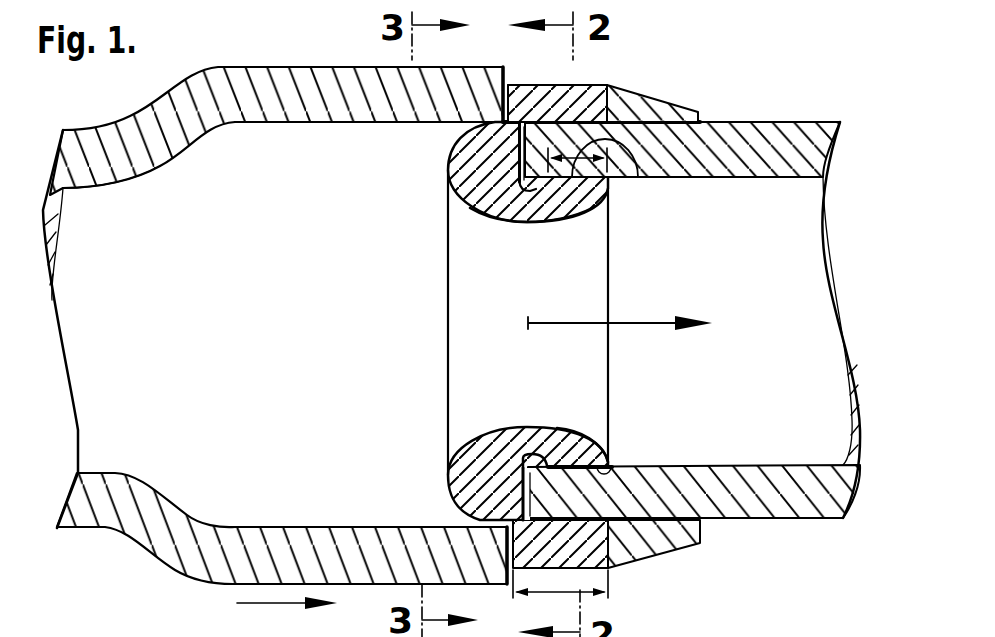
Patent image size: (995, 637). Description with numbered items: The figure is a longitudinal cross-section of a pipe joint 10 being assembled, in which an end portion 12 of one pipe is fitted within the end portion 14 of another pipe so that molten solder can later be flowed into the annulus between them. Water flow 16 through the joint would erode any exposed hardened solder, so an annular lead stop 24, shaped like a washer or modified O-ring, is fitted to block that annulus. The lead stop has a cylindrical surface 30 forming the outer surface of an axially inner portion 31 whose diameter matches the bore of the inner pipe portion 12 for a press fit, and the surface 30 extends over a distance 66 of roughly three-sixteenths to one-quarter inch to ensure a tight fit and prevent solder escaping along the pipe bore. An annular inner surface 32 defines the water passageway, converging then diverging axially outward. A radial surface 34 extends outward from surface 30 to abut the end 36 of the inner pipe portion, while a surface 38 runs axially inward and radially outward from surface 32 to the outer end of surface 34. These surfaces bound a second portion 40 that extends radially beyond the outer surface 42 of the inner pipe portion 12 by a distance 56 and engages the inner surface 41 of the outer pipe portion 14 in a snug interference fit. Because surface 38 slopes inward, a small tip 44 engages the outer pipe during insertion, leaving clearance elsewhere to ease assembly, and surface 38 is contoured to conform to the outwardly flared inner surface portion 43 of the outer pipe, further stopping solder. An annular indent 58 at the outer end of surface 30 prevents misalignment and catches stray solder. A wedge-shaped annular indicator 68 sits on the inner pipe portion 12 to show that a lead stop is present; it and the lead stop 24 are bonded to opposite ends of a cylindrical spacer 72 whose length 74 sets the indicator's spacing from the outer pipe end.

The pipe joint 10 is at (660, 70).
The inner pipe end portion 12 is at (798, 122).
The outer pipe end portion 14 is at (317, 68).
The water flow 16 is at (633, 318).
The lead stop 24 is at (608, 217).
The cylindrical surface 30 is at (617, 463).
The axially inner portion 31 is at (590, 437).
The annular inner surface 32 is at (518, 223).
The radial surface 34 is at (517, 128).
The end of inner pipe portion 36 is at (517, 158).
The contoured outer surface 38 is at (512, 518).
The radially outwardly extending second portion 40 is at (492, 493).
The inner surface of outer pipe portion 41 is at (341, 124).
The outer surface of inner pipe portion 42 is at (790, 519).
The outwardly flared inner surface portion 43 is at (173, 157).
The tip 44 is at (507, 96).
The radial extension distance 56 is at (497, 462).
The annular indent 58 is at (530, 189).
The axial length of cylindrical surface 66 is at (636, 177).
The annular indicator 68 is at (668, 100).
The cylindrical spacer 72 is at (575, 86).
The spacer length 74 is at (560, 594).